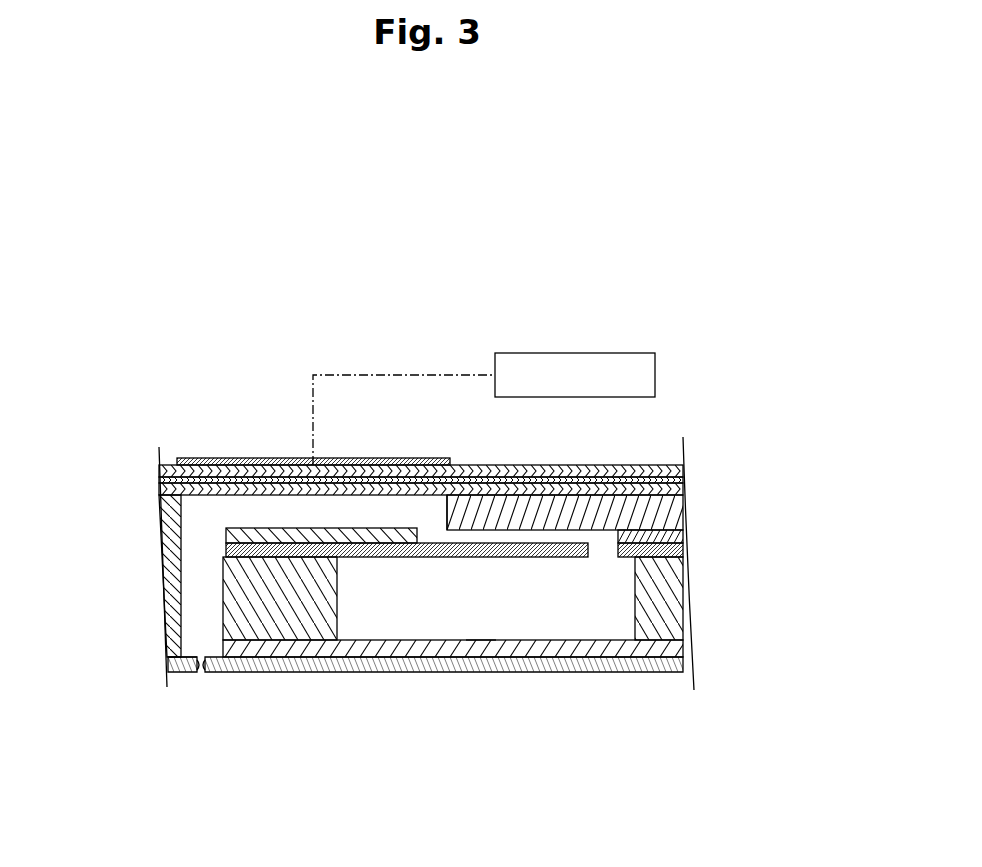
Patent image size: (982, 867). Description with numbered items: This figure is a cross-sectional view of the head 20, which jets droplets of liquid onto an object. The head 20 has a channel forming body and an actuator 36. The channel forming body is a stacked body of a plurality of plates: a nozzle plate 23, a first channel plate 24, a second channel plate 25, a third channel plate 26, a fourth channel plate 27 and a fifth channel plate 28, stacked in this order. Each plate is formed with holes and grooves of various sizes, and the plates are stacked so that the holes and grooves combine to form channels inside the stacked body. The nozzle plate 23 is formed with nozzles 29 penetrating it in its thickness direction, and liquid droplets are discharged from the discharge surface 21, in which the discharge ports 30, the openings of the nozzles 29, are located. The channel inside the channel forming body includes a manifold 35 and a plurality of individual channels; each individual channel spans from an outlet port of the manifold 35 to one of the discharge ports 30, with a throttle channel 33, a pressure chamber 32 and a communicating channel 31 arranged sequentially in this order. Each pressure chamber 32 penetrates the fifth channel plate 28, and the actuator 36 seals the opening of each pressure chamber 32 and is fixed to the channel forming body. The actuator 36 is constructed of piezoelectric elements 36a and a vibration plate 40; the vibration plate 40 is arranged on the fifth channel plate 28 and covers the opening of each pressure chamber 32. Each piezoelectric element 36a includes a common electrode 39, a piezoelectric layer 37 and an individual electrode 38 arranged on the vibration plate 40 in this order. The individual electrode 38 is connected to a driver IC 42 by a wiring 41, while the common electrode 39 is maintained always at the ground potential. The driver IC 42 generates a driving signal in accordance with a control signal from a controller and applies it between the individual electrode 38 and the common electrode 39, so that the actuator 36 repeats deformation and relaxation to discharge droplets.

The head 20 is at (443, 254).
The discharge surface 21 is at (298, 673).
The nozzle plate 23 is at (681, 665).
The first channel plate 24 is at (670, 647).
The second channel plate 25 is at (670, 593).
The third channel plate 26 is at (684, 544).
The fourth channel plate 27 is at (684, 531).
The fifth channel plate 28 is at (685, 508).
The nozzle 29 is at (197, 663).
The discharge port 30 is at (203, 669).
The communicating channel 31 is at (185, 593).
The pressure chamber 32 is at (334, 494).
The throttle channel 33 is at (485, 494).
The manifold 35 is at (493, 642).
The actuator 36 is at (123, 281).
The piezoelectric element 36a is at (173, 326).
The piezoelectric layer 37 is at (223, 466).
The individual electrode 38 is at (257, 477).
The common electrode 39 is at (302, 483).
The vibration plate 40 is at (187, 459).
The wiring 41 is at (428, 374).
The driver IC 42 is at (568, 353).